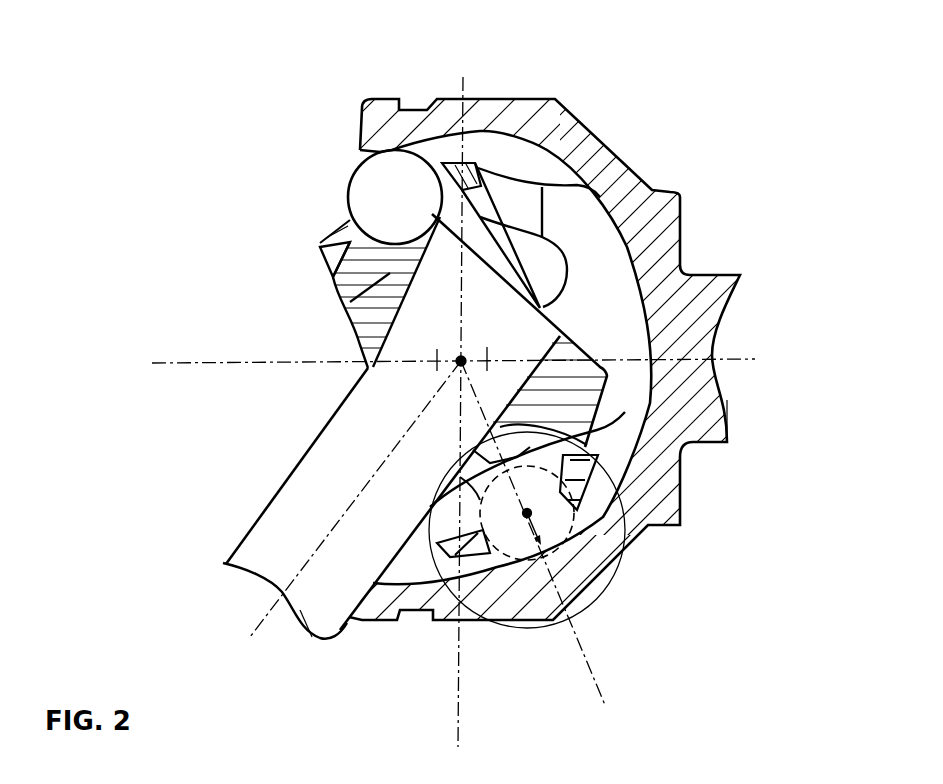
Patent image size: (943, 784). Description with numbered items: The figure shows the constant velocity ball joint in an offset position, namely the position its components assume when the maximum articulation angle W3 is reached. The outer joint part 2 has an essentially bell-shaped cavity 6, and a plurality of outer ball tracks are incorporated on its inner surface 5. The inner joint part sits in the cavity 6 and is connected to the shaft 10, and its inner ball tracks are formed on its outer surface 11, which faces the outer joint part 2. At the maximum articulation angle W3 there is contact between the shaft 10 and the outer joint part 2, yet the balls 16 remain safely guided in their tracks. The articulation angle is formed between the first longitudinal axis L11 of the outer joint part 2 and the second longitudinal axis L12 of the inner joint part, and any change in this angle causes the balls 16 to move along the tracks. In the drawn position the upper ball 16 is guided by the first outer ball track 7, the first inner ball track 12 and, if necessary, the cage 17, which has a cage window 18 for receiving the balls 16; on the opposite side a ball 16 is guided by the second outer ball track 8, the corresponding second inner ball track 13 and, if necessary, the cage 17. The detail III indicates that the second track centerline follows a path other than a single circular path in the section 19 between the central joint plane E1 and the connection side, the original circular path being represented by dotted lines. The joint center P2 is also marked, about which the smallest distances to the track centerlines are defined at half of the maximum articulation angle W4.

The outer joint part 2 is at (500, 97).
The inner surface 5 is at (612, 311).
The cavity 6 is at (686, 272).
The first outer ball track 7 is at (543, 100).
The second outer ball track 8 is at (540, 267).
The shaft 10 is at (335, 592).
The outer surface 11 is at (334, 287).
The first inner ball track 12 is at (334, 303).
The second inner ball track 13 is at (644, 398).
The ball 16 is at (368, 174).
The cage 17 is at (322, 243).
The cage window 18 is at (348, 204).
The section 19 is at (578, 550).
The central joint plane E1 is at (465, 99).
The first longitudinal axis L11 is at (752, 357).
The second longitudinal axis L12 is at (273, 605).
The joint center P2 is at (455, 368).
The maximum articulation angle W3 is at (175, 368).
The maximum articulation angle W4 is at (466, 731).
The detail III is at (617, 573).